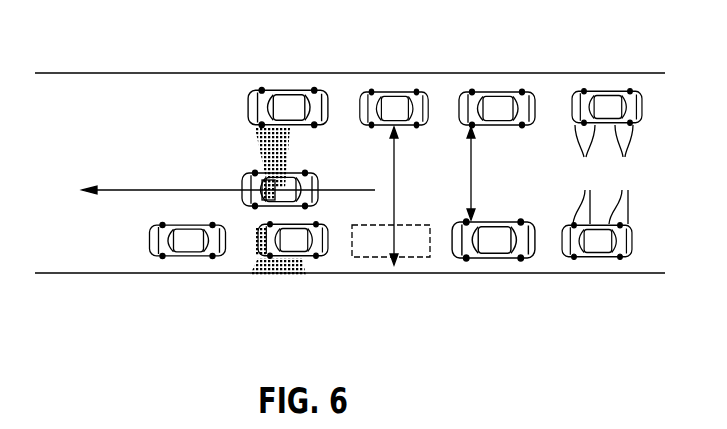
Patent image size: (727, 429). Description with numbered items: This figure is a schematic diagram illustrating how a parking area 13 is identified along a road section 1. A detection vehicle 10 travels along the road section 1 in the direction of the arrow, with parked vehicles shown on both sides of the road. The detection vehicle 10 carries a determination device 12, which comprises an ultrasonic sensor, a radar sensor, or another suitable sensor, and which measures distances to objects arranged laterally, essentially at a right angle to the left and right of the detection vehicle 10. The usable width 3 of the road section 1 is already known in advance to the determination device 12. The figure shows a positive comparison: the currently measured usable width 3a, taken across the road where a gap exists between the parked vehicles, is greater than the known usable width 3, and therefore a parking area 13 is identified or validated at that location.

The road section 1 is at (74, 72).
The usable width 3 is at (474, 171).
The currently measured usable width 3a is at (398, 171).
The detection vehicle 10 is at (318, 190).
The determination device 12 is at (262, 185).
The parking area 13 is at (418, 258).